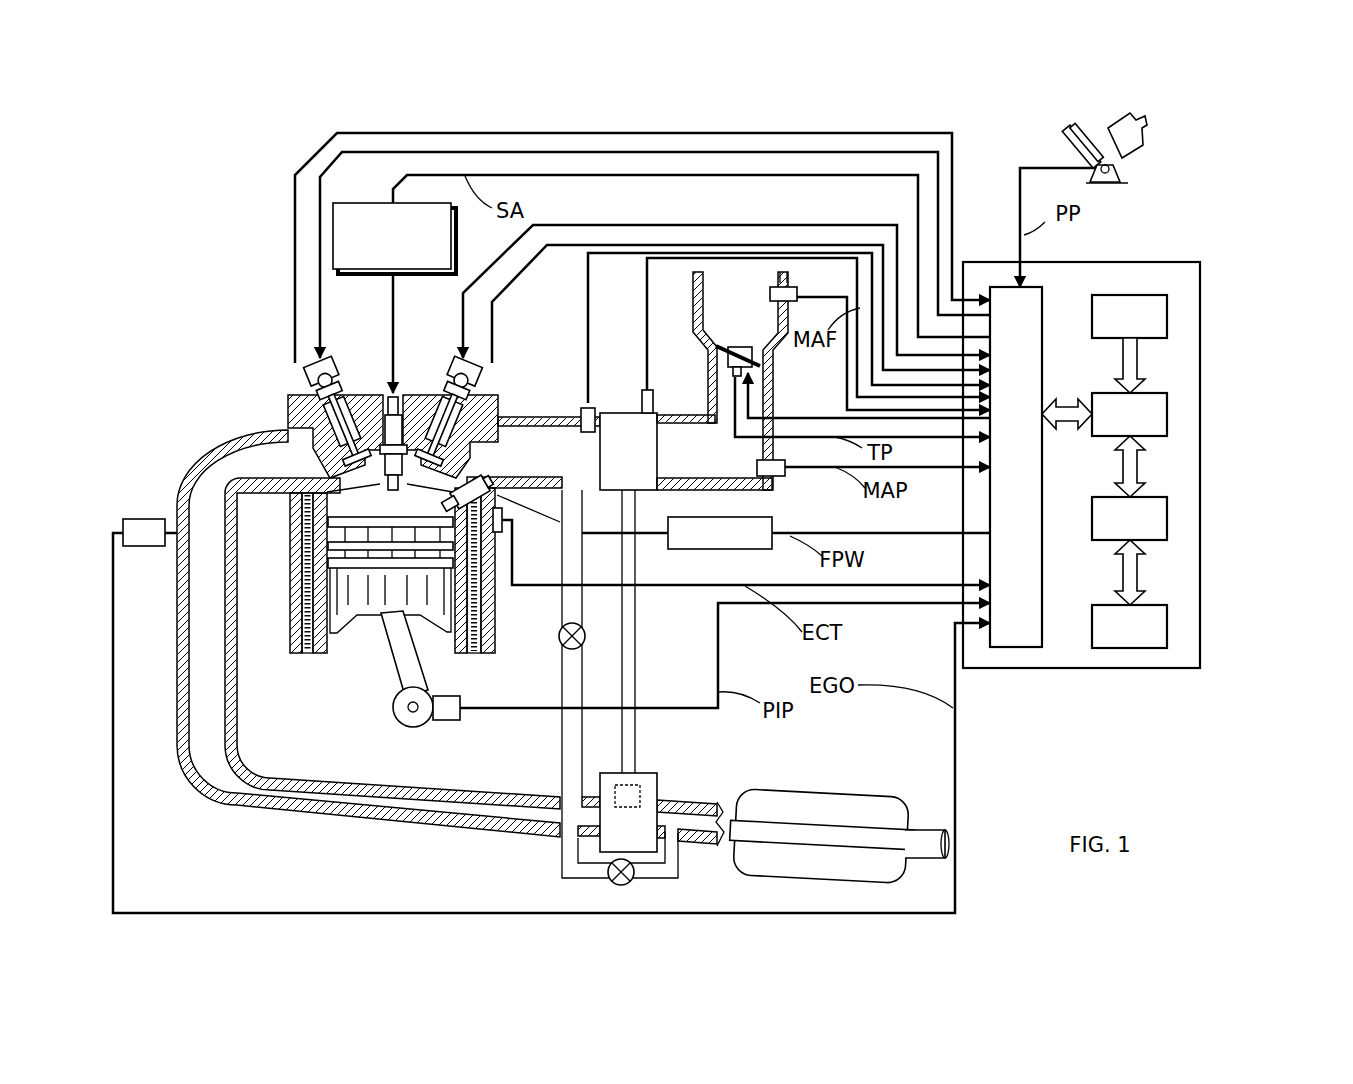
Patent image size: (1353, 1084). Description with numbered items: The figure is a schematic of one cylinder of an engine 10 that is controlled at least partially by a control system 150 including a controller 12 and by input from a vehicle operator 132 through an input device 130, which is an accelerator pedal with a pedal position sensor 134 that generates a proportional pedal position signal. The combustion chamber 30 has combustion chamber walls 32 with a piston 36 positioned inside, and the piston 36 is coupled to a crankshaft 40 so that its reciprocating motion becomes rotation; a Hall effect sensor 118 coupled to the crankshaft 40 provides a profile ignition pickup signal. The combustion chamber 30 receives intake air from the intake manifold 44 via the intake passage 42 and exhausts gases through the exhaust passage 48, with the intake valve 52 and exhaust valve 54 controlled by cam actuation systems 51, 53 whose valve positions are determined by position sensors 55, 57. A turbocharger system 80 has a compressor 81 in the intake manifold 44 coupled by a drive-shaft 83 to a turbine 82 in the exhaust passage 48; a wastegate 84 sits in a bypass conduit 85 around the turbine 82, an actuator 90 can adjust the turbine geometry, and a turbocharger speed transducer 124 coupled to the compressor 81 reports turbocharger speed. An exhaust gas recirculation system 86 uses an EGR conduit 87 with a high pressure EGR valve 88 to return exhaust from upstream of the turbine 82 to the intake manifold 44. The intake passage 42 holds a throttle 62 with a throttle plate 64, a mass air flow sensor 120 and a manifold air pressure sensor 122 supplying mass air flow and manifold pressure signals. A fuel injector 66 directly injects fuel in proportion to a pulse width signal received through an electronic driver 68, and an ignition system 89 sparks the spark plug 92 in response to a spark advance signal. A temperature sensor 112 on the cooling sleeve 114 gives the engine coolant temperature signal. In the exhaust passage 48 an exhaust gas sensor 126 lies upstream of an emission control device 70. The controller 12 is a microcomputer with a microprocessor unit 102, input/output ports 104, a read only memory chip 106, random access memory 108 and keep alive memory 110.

The engine 10 is at (128, 186).
The controller 12 is at (1192, 262).
The combustion chamber 30 is at (302, 603).
The combustion chamber walls 32 is at (333, 650).
The piston 36 is at (376, 620).
The crankshaft 40 is at (398, 725).
The intake passage 42 is at (755, 322).
The intake manifold 44 is at (703, 467).
The exhaust passage 48 is at (238, 472).
The cam actuation system 51 is at (456, 362).
The intake valve 52 is at (458, 452).
The cam actuation system 53 is at (328, 362).
The exhaust valve 54 is at (300, 430).
The position sensor 55 is at (480, 385).
The position sensor 57 is at (306, 372).
The throttle 62 is at (752, 350).
The throttle plate 64 is at (722, 350).
The fuel injector 66 is at (492, 500).
The electronic driver 68 is at (712, 550).
The emission control device 70 is at (880, 806).
The turbocharger system 80 is at (652, 656).
The compressor 81 is at (632, 418).
The turbine 82 is at (640, 782).
The drive-shaft 83 is at (636, 668).
The wastegate 84 is at (621, 884).
The bypass conduit 85 is at (592, 878).
The exhaust gas recirculation system 86 is at (550, 660).
The EGR conduit 87 is at (584, 598).
The high pressure EGR valve 88 is at (586, 640).
The ignition system 89 is at (345, 204).
The actuator 90 is at (640, 797).
The spark plug 92 is at (397, 396).
The microprocessor unit 102 is at (1168, 410).
The input/output ports 104 is at (1044, 296).
The read only memory chip 106 is at (1168, 312).
The random access memory 108 is at (1168, 514).
The keep alive memory 110 is at (1168, 622).
The temperature sensor 112 is at (502, 520).
The cooling sleeve 114 is at (478, 612).
The Hall effect sensor 118 is at (452, 722).
The mass air flow sensor 120 is at (788, 290).
The manifold air pressure sensor 122 is at (783, 476).
The turbocharger speed transducer 124 is at (655, 408).
The exhaust gas sensor 126 is at (122, 530).
The input device 130 is at (1085, 140).
The vehicle operator 132 is at (1147, 125).
The pedal position sensor 134 is at (1122, 170).
The control system 150 is at (1303, 138).